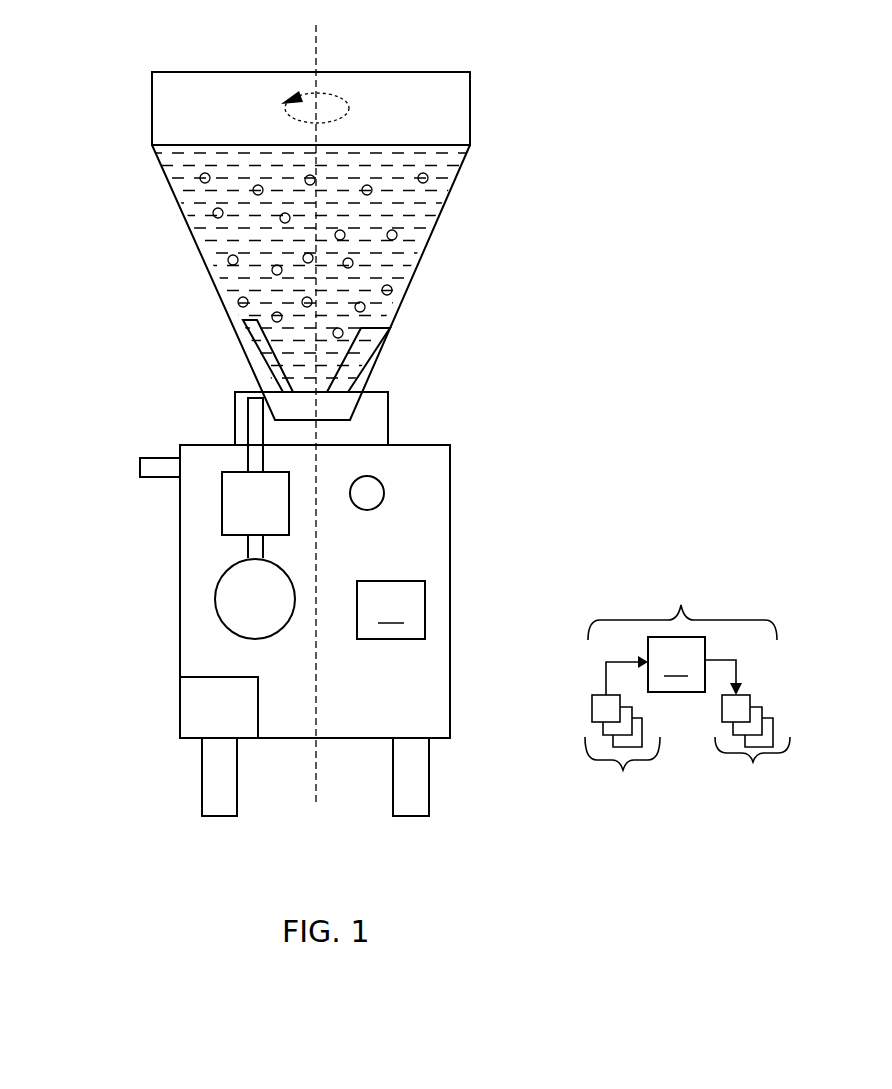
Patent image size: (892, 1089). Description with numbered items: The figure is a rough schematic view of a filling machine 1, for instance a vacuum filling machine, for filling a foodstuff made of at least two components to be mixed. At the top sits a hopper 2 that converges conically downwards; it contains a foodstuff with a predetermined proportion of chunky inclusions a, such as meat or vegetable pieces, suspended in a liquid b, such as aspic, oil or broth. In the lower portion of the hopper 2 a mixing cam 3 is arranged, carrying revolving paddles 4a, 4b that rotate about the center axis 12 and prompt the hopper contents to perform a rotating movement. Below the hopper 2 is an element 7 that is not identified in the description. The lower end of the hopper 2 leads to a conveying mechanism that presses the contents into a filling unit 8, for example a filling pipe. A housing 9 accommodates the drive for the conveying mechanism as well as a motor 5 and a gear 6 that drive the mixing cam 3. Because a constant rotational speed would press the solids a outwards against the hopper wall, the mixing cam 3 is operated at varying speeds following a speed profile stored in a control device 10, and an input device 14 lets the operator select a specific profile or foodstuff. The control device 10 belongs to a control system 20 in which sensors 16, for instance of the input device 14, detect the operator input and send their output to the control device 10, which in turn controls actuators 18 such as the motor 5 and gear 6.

The filling machine 1 is at (125, 241).
The hopper 2 is at (445, 213).
The chunky inclusions a is at (428, 180).
The liquid b is at (412, 268).
The mixing cam 3 is at (318, 356).
The paddle 4a is at (245, 361).
The paddle 4b is at (380, 373).
The motor 5 is at (291, 604).
The gear 6 is at (289, 508).
The housing 7 is at (355, 412).
The filling unit 8 is at (153, 457).
The housing 9 is at (451, 620).
The control device 10 is at (258, 690).
The center axis 12 is at (316, 28).
The input device 14 is at (391, 610).
The sensors 16 is at (622, 759).
The actuators 18 is at (754, 758).
The control system 20 is at (689, 686).